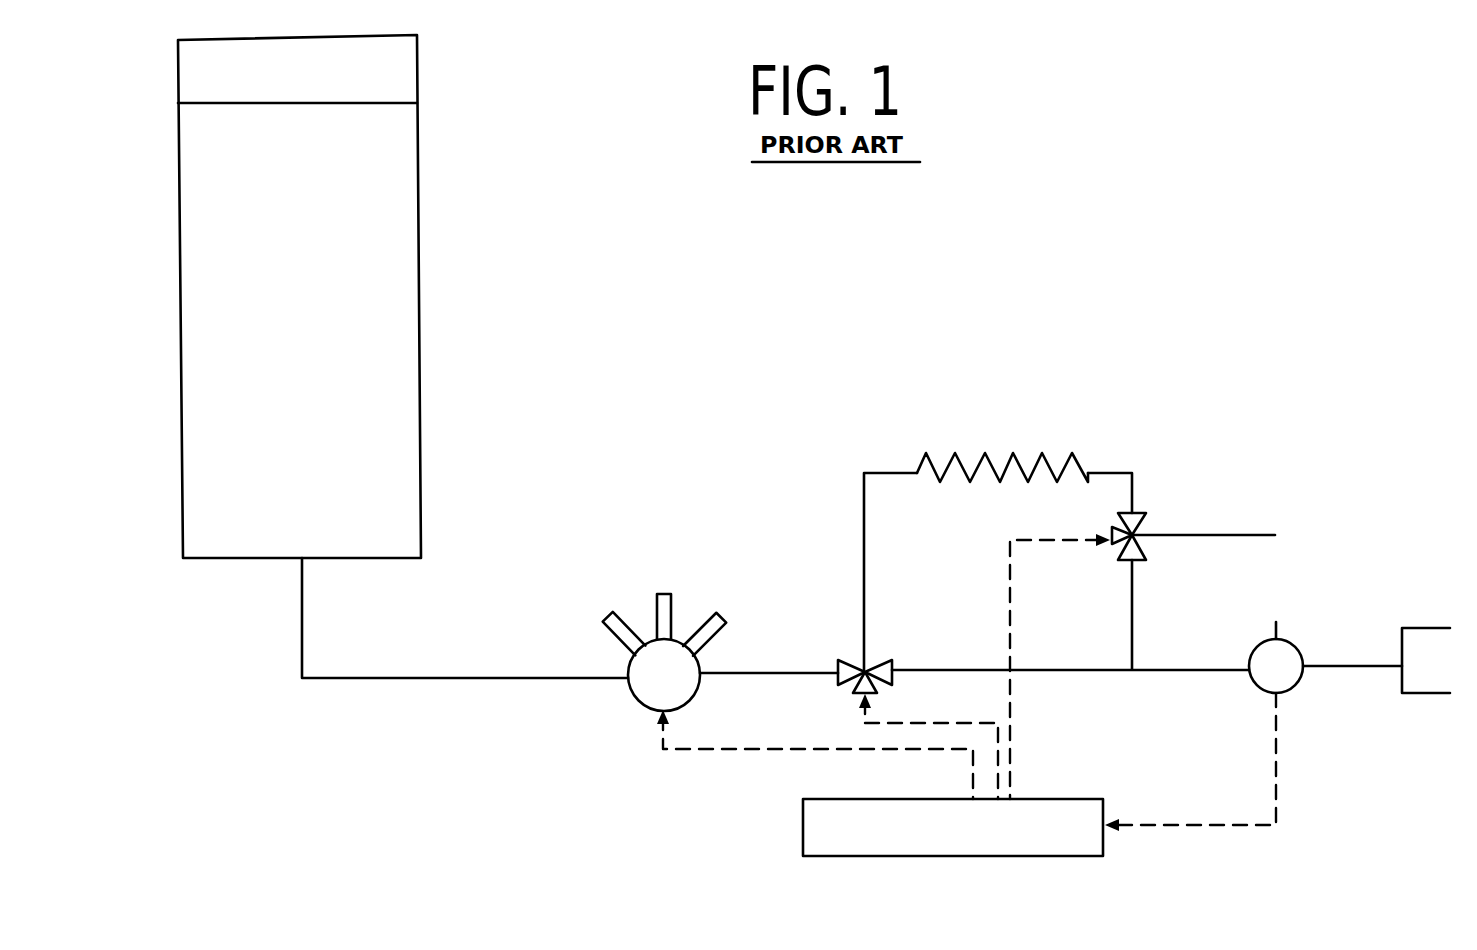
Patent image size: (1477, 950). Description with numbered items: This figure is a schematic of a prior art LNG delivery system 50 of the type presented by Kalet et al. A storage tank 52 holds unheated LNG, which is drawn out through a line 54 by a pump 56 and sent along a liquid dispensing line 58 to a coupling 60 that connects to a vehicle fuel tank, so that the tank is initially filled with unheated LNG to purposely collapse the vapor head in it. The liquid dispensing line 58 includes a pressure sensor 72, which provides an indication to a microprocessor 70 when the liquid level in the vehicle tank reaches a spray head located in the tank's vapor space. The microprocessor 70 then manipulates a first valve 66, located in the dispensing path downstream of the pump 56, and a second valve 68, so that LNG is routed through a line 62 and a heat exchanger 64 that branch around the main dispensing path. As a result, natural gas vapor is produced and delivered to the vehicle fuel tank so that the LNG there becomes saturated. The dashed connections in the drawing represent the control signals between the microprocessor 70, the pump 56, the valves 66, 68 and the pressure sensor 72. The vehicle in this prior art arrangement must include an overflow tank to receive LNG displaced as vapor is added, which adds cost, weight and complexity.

The LNG delivery system 50 is at (781, 300).
The storage tank 52 is at (420, 270).
The line 54 is at (445, 678).
The pump 56 is at (670, 600).
The liquid dispensing line 58 is at (940, 667).
The coupling 60 is at (1425, 628).
The line 62 is at (890, 473).
The heat exchanger 64 is at (990, 460).
The valve 66 is at (856, 660).
The valve 68 is at (1137, 525).
The microprocessor 70 is at (1060, 845).
The pressure sensor 72 is at (1292, 645).